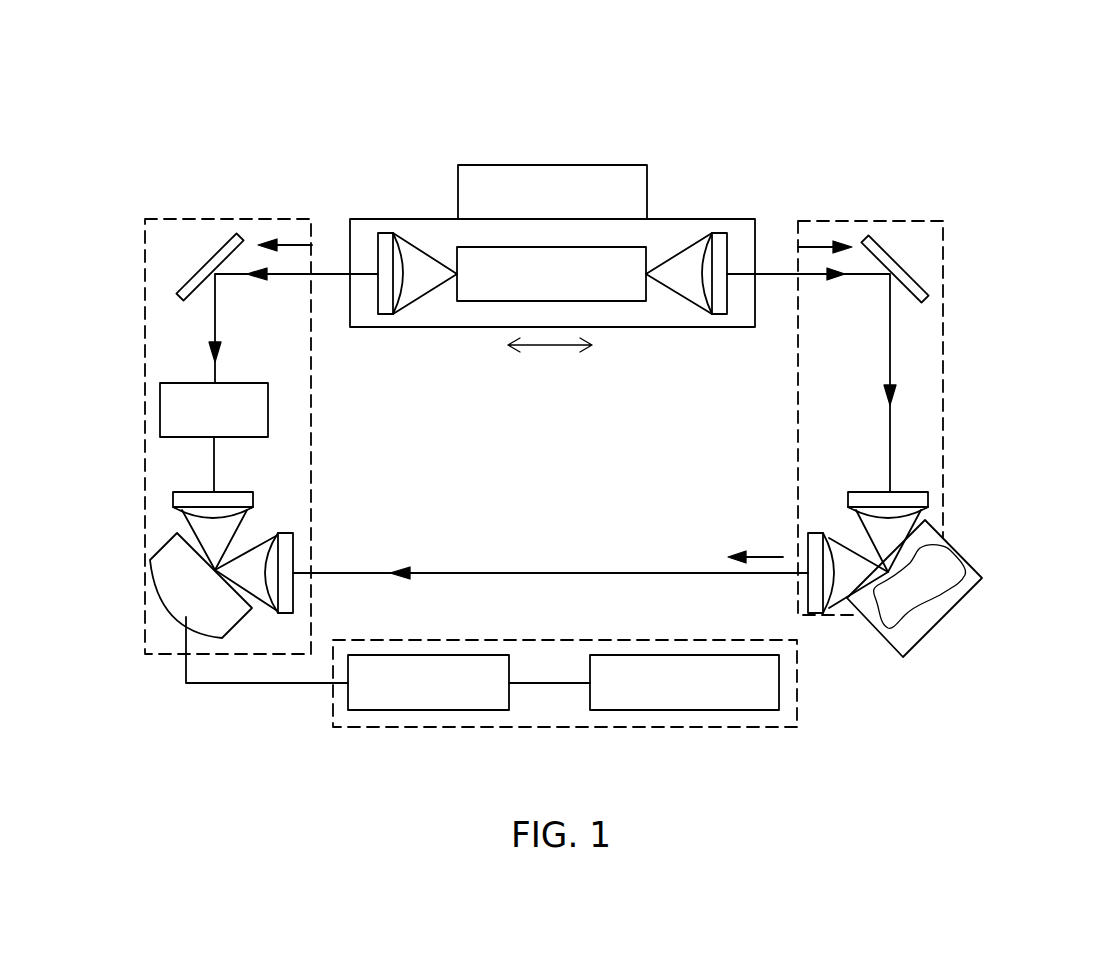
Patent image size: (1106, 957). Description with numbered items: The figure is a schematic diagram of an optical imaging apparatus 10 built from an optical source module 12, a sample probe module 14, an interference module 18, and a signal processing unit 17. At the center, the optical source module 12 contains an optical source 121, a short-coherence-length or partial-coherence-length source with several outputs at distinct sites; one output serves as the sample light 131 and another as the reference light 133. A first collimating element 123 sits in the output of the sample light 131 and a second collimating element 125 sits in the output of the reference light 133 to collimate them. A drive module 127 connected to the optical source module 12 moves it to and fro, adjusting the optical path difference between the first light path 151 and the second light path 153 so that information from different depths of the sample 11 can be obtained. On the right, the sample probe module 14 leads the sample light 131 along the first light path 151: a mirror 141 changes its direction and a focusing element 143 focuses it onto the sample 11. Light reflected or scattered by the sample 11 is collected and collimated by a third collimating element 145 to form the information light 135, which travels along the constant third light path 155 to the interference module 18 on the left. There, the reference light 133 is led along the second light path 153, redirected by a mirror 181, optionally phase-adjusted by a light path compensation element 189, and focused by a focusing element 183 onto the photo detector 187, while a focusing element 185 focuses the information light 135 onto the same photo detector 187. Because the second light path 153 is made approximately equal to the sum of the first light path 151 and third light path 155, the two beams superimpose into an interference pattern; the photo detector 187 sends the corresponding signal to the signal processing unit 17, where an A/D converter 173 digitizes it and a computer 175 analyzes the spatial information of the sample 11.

The optical imaging apparatus 10 is at (1028, 147).
The sample 11 is at (950, 545).
The optical source module 12 is at (435, 219).
The optical source 121 is at (471, 302).
The first collimating element 123 is at (718, 230).
The second collimating element 125 is at (378, 233).
The drive module 127 is at (618, 165).
The sample light 131 is at (828, 247).
The reference light 133 is at (295, 245).
The information light 135 is at (765, 557).
The sample probe module 14 is at (887, 219).
The mirror 141 is at (915, 280).
The focusing element 143 is at (922, 490).
The third collimating element 145 is at (808, 535).
The first light path 151 is at (786, 285).
The second light path 153 is at (215, 337).
The third light path 155 is at (525, 573).
The signal processing unit 17 is at (640, 727).
The A/D converter 173 is at (390, 710).
The computer 175 is at (781, 700).
The interference module 18 is at (203, 219).
The mirror 181 is at (186, 284).
The focusing element 183 is at (185, 492).
The focusing element 185 is at (295, 540).
The photo detector 187 is at (148, 558).
The light path compensation element 189 is at (160, 388).